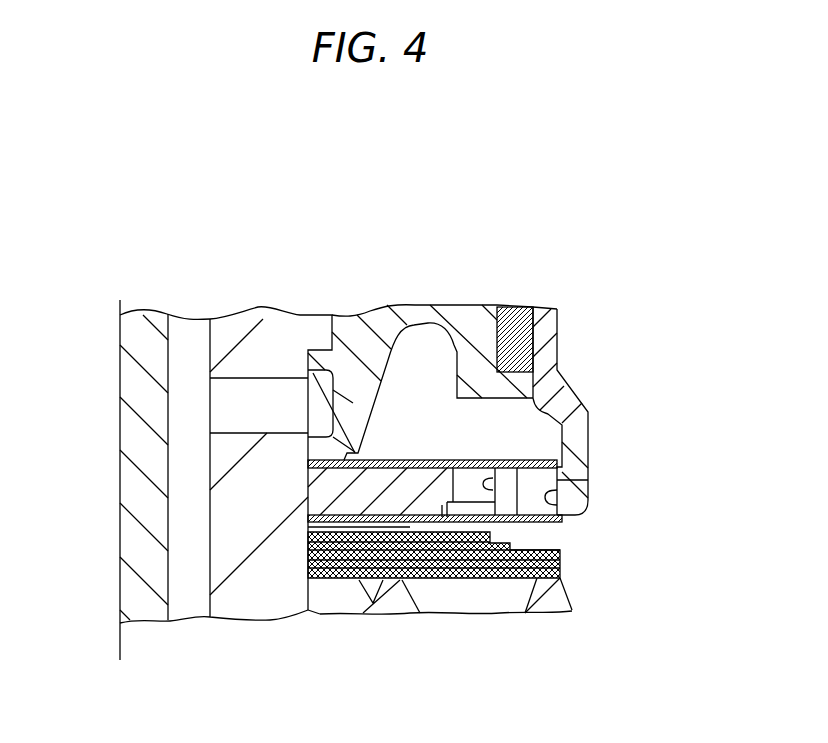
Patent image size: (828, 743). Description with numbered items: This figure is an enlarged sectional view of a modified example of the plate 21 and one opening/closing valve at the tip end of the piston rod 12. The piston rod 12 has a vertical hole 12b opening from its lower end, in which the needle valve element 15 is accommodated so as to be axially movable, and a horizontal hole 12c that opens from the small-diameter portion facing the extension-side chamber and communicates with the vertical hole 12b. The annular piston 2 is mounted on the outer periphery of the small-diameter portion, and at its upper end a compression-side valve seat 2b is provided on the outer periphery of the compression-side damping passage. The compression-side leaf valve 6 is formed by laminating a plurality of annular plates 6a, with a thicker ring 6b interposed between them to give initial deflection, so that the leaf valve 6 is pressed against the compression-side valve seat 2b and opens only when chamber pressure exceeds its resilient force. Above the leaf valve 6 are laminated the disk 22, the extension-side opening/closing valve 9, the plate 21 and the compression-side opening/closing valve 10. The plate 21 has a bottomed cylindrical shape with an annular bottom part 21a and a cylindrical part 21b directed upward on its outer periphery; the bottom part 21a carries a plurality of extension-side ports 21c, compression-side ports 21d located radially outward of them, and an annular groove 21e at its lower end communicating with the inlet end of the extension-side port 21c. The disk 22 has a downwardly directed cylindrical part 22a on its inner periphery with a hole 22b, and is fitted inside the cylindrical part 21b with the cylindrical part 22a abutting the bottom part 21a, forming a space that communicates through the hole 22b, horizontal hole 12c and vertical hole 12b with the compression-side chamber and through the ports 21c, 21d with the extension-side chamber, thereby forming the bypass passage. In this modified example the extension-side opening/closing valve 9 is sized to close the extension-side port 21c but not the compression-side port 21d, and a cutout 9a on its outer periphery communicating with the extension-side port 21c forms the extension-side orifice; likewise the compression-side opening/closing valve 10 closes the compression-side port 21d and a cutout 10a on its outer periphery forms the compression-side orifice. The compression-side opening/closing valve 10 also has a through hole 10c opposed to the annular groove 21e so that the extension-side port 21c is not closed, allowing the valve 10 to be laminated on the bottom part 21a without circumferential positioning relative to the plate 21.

The piston 2 is at (304, 628).
The compression-side valve seat 2b is at (562, 612).
The compression-side leaf valve 6 is at (553, 614).
The annular plate 6a is at (572, 611).
The ring 6b is at (557, 592).
The extension-side opening/closing valve 9 is at (472, 452).
The cutout 9a is at (500, 462).
The compression-side opening/closing valve 10 is at (562, 553).
The cutout 10a is at (553, 529).
The through hole 10c is at (472, 580).
The piston rod 12 is at (300, 296).
The vertical hole 12b is at (210, 532).
The horizontal hole 12c is at (278, 388).
The needle valve element 15 is at (130, 446).
The plate 21 is at (596, 389).
The bottom part 21a is at (348, 580).
The cylindrical part 21b is at (556, 335).
The extension-side port 21c is at (515, 479).
The compression-side port 21d is at (557, 497).
The annular groove 21e is at (420, 613).
The disk 22 is at (478, 296).
The cylindrical part 22a is at (388, 363).
The hole 22b is at (358, 404).